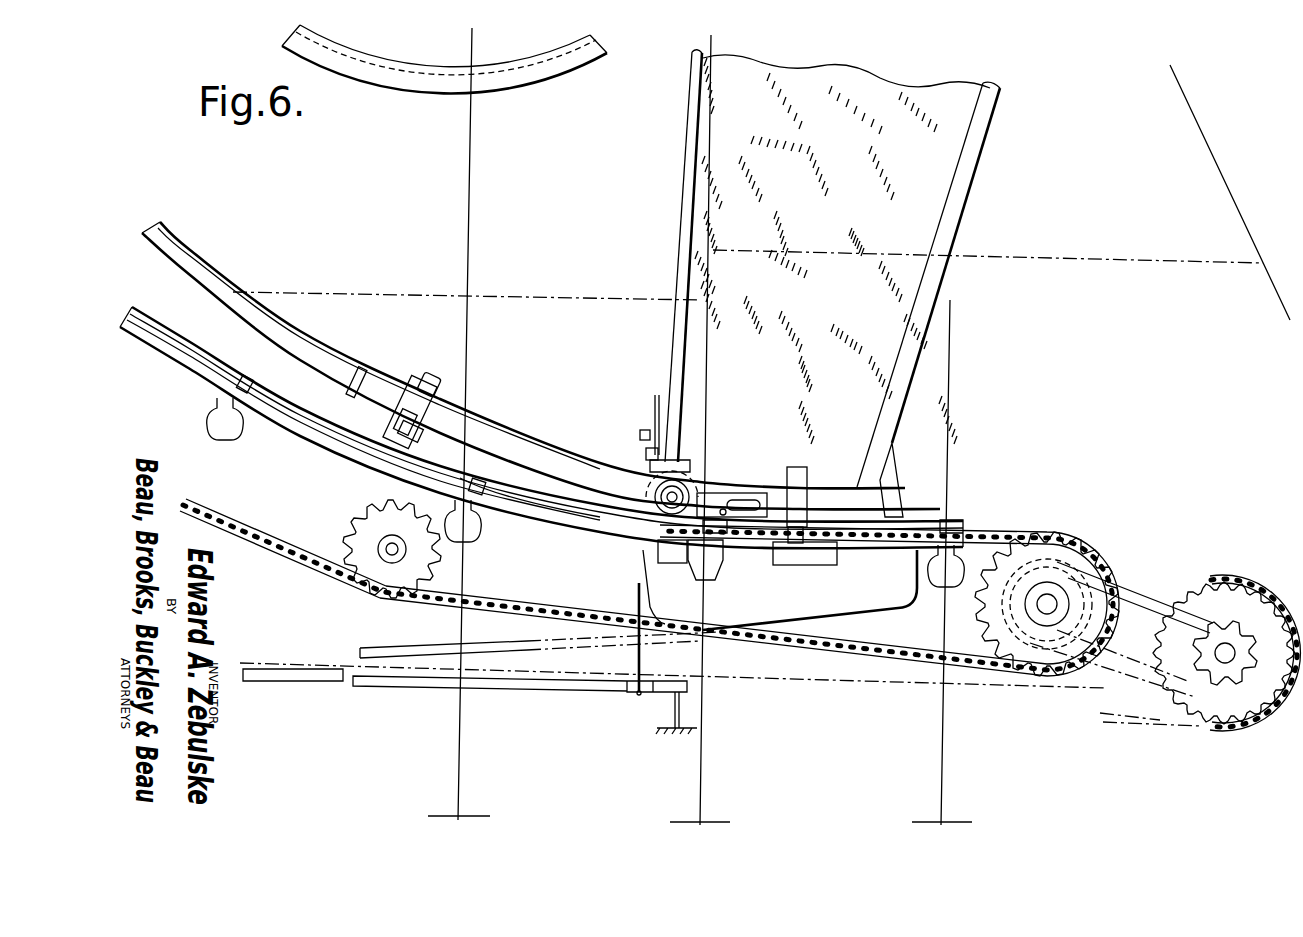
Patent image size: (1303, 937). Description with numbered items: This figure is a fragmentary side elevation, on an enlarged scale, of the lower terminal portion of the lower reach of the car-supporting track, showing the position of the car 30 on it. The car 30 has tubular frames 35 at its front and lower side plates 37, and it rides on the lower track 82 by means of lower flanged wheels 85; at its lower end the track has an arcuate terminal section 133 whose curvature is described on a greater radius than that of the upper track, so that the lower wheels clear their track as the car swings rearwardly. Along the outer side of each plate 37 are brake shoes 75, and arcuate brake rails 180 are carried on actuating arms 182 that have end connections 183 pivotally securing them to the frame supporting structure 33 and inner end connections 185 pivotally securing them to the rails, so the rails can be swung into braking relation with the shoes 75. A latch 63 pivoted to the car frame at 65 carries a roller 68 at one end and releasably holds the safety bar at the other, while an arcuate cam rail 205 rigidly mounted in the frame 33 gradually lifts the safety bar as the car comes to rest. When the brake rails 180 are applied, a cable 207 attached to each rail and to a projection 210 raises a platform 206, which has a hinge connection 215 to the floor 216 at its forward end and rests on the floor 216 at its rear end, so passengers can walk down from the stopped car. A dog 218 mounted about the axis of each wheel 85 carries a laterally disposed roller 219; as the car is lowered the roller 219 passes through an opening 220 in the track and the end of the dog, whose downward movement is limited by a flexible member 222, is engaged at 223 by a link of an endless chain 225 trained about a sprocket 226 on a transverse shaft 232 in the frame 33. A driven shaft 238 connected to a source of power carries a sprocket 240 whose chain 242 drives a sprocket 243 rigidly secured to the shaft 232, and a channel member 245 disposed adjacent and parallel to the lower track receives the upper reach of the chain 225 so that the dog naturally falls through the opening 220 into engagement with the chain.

The car 30 is at (977, 163).
The tubular frames 35 is at (687, 147).
The frame supporting structure 33 is at (433, 393).
The lower side plates 37 is at (780, 590).
The latch 63 is at (655, 407).
The pivot of latch 65 is at (640, 433).
The roller 68 is at (646, 455).
The brake shoes 75 is at (803, 553).
The lower track 82 is at (178, 330).
The lower flanged wheels 85 is at (640, 492).
The arcuate terminal section 133 is at (532, 490).
The brake rails 180 is at (322, 343).
The actuating arms 182 is at (770, 493).
The end connections 183 is at (422, 377).
The inner end connections 185 is at (363, 373).
The arcuate cam rail 205 is at (430, 80).
The platform 206 is at (512, 692).
The cable 207 is at (641, 658).
The projection 210 is at (665, 729).
The hinge connection 215 is at (287, 680).
The floor 216 is at (680, 710).
The dog 218 is at (718, 517).
The roller 219 is at (700, 525).
The opening or notch 220 is at (695, 495).
The flexible member 222 is at (683, 453).
The engagement of dog with chain 223 is at (737, 540).
The endless chain 225 is at (1000, 540).
The sprocket 226 is at (1073, 560).
The transverse shaft 232 is at (1047, 602).
The driven shaft 238 is at (1228, 648).
The sprocket 240 is at (1215, 640).
The chain 242 is at (1170, 607).
The sprocket 243 is at (1093, 583).
The channel member 245 is at (872, 537).